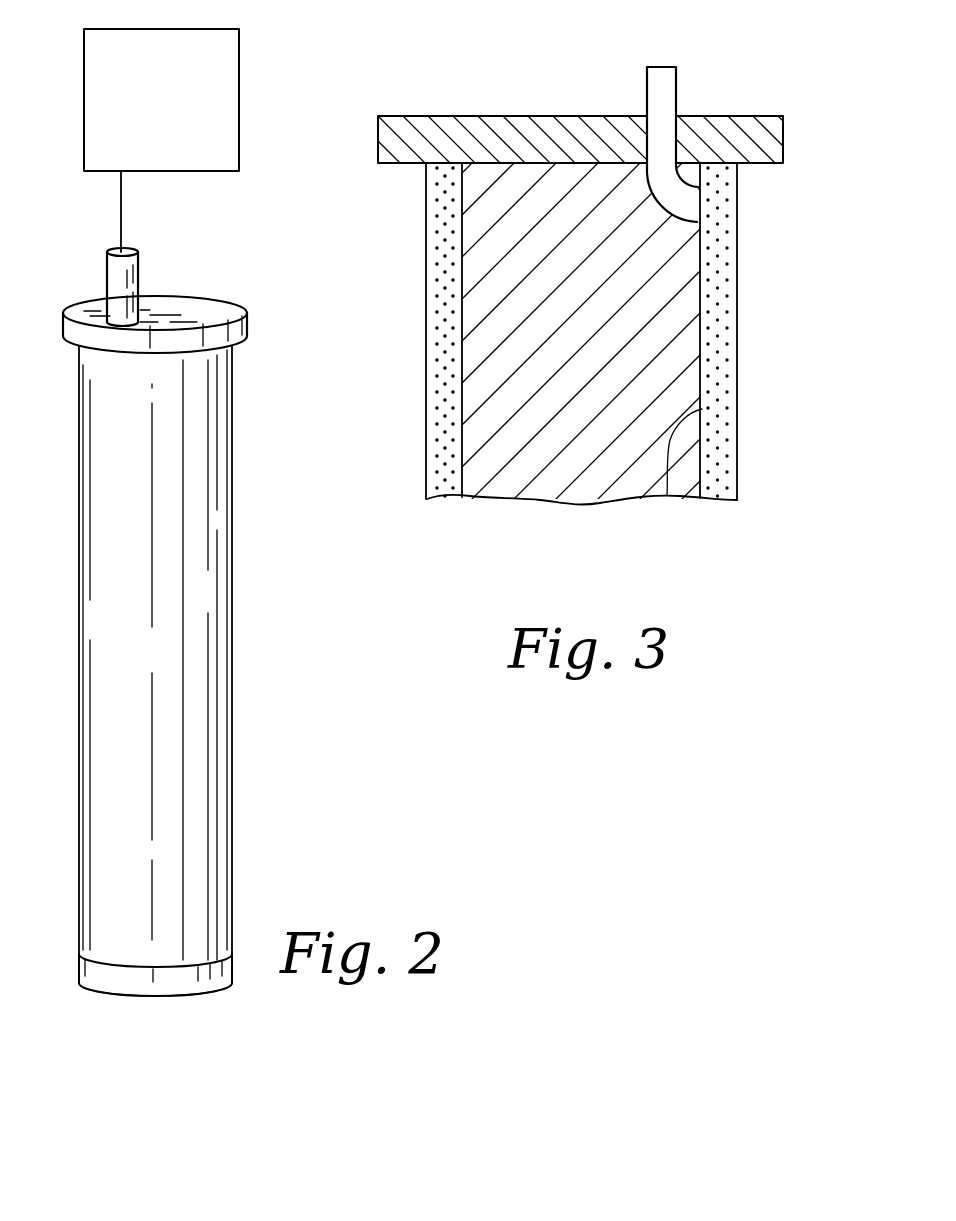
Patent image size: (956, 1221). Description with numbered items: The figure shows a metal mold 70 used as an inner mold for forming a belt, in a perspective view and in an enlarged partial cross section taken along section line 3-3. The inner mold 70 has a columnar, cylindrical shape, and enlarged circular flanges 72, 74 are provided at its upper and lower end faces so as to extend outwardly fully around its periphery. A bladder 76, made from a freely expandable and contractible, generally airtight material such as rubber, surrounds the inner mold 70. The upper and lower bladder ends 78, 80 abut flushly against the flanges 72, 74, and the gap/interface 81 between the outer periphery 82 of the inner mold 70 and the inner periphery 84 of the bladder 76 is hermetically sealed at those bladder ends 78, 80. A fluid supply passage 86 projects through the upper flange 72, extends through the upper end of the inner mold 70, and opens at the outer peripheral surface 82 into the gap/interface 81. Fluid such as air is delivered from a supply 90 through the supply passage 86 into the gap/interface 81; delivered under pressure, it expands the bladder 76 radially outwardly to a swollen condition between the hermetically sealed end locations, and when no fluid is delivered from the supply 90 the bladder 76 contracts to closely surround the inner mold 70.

In FIG. 2, the section line 3- 3 is at (156, 183).
In FIG. 2, the metal mold 70 is at (210, 997).
In FIG. 3, the metal mold 70 is at (555, 408).
In FIG. 2, the upper flange 72 is at (213, 300).
In FIG. 3, the upper flange 72 is at (518, 125).
In FIG. 2, the lower flange 74 is at (102, 993).
In FIG. 2, the bladder 76 is at (170, 680).
In FIG. 3, the bladder 76 is at (718, 253).
In FIG. 3, the upper bladder end 78 is at (442, 163).
In FIG. 2, the lower bladder end 80 is at (140, 967).
In FIG. 3, the gap/interface 81 is at (667, 495).
In FIG. 3, the outer periphery 82 is at (703, 172).
In FIG. 3, the inner periphery 84 is at (463, 218).
In FIG. 2, the fluid supply passage 86 is at (117, 280).
In FIG. 3, the fluid supply passage 86 is at (665, 93).
In FIG. 2, the supply 90 is at (208, 156).